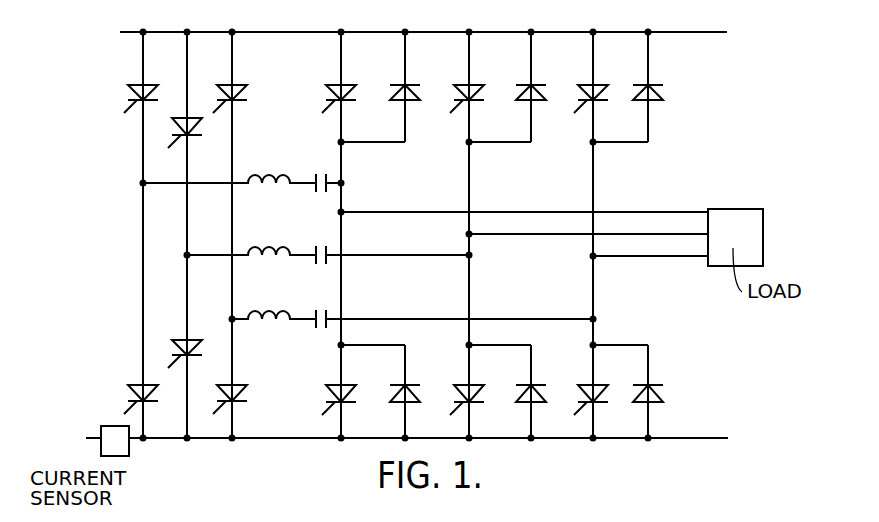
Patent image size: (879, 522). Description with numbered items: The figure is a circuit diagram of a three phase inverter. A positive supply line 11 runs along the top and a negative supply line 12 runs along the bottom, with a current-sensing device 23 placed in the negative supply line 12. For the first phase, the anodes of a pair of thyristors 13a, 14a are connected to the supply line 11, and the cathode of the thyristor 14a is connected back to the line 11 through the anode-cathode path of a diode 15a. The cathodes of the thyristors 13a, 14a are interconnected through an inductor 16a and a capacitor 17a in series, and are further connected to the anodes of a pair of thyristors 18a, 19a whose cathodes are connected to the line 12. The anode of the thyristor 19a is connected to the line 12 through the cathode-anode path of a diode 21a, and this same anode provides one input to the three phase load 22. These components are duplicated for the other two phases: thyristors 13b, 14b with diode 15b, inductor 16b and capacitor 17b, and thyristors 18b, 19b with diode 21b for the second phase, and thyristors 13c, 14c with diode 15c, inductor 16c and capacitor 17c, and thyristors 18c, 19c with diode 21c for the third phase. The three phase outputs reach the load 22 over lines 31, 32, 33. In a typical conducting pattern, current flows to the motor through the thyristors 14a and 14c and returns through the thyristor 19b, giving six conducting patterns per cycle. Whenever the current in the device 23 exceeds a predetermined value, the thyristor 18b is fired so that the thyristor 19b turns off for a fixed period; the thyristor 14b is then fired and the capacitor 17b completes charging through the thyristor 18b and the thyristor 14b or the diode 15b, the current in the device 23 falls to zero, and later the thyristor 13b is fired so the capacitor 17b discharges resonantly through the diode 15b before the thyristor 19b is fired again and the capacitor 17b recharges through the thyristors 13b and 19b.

The positive supply line 11 is at (302, 12).
The negative supply line 12 is at (311, 443).
The thyristor 13a is at (178, 130).
The thyristor 13b is at (222, 90).
The thyristor 13c is at (127, 90).
The thyristor 14a is at (456, 90).
The thyristor 14b is at (580, 90).
The thyristor 14c is at (326, 90).
The diode 15a is at (518, 90).
The diode 15b is at (636, 90).
The diode 15c is at (392, 90).
The inductor 16a is at (243, 250).
The inductor 16b is at (243, 315).
The inductor 16c is at (244, 177).
The capacitor 17a is at (313, 250).
The capacitor 17b is at (315, 315).
The capacitor 17c is at (317, 178).
The thyristor 18a is at (178, 338).
The thyristor 18b is at (250, 394).
The thyristor 18c is at (124, 390).
The thyristor 19a is at (485, 398).
The thyristor 19b is at (609, 398).
The thyristor 19c is at (356, 398).
The diode 21a is at (547, 398).
The diode 21b is at (665, 398).
The diode 21c is at (421, 398).
The three phase load 22 is at (718, 209).
The device 23 is at (135, 448).
The line 31 is at (692, 210).
The line 32 is at (610, 232).
The line 33 is at (682, 258).